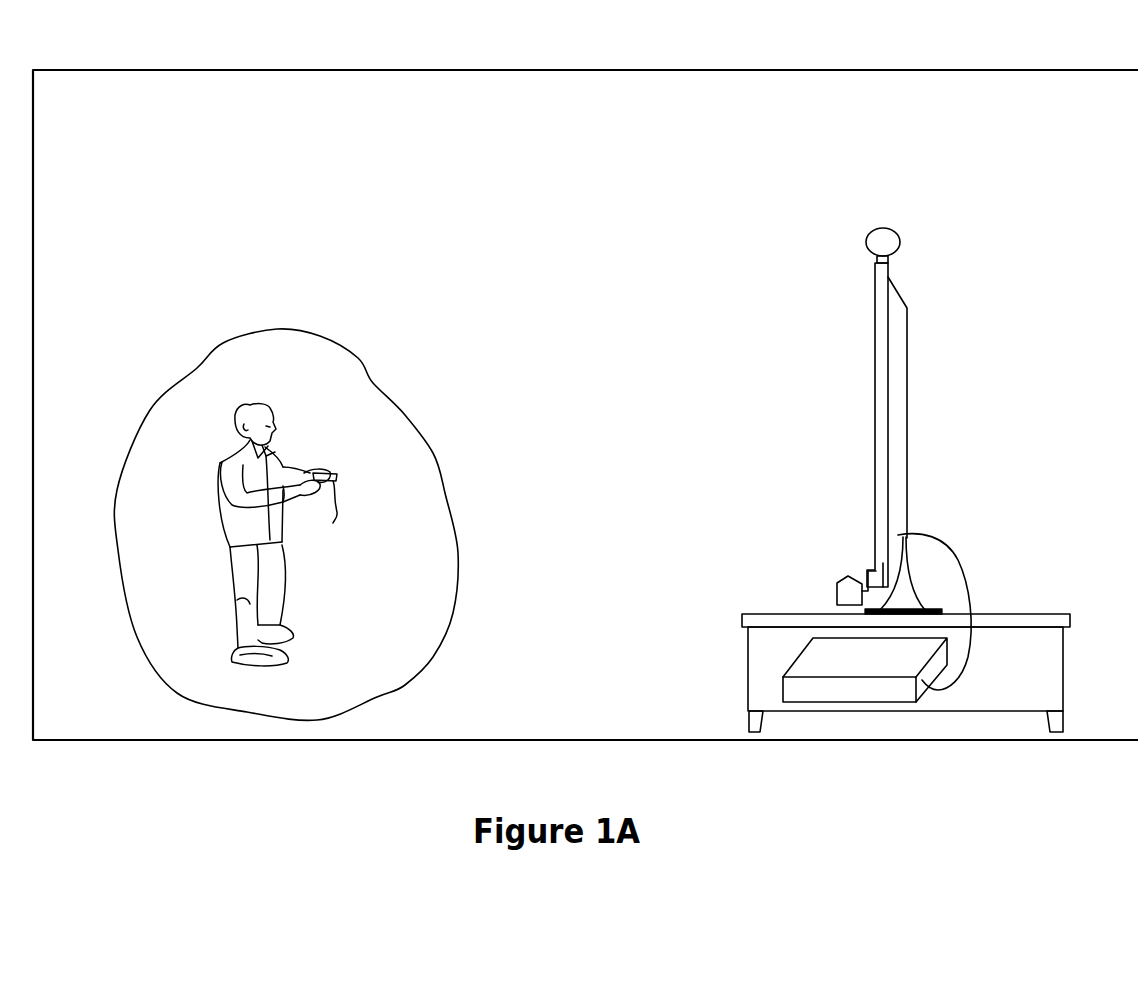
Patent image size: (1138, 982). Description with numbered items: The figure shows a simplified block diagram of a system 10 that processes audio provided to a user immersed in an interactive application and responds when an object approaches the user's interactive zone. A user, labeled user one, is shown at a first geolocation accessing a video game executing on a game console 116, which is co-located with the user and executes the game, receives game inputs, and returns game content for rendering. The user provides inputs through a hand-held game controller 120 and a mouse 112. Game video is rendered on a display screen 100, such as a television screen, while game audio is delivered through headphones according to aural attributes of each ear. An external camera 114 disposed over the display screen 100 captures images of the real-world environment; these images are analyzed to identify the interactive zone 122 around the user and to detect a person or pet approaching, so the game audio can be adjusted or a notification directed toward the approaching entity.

The system 10 is at (512, 160).
The display screen 100 is at (913, 433).
The mouse 112 is at (847, 580).
The external camera 114 is at (897, 232).
The game console 116 is at (873, 687).
The hand-held game controller 120 is at (340, 510).
The interactive zone 122 is at (353, 397).